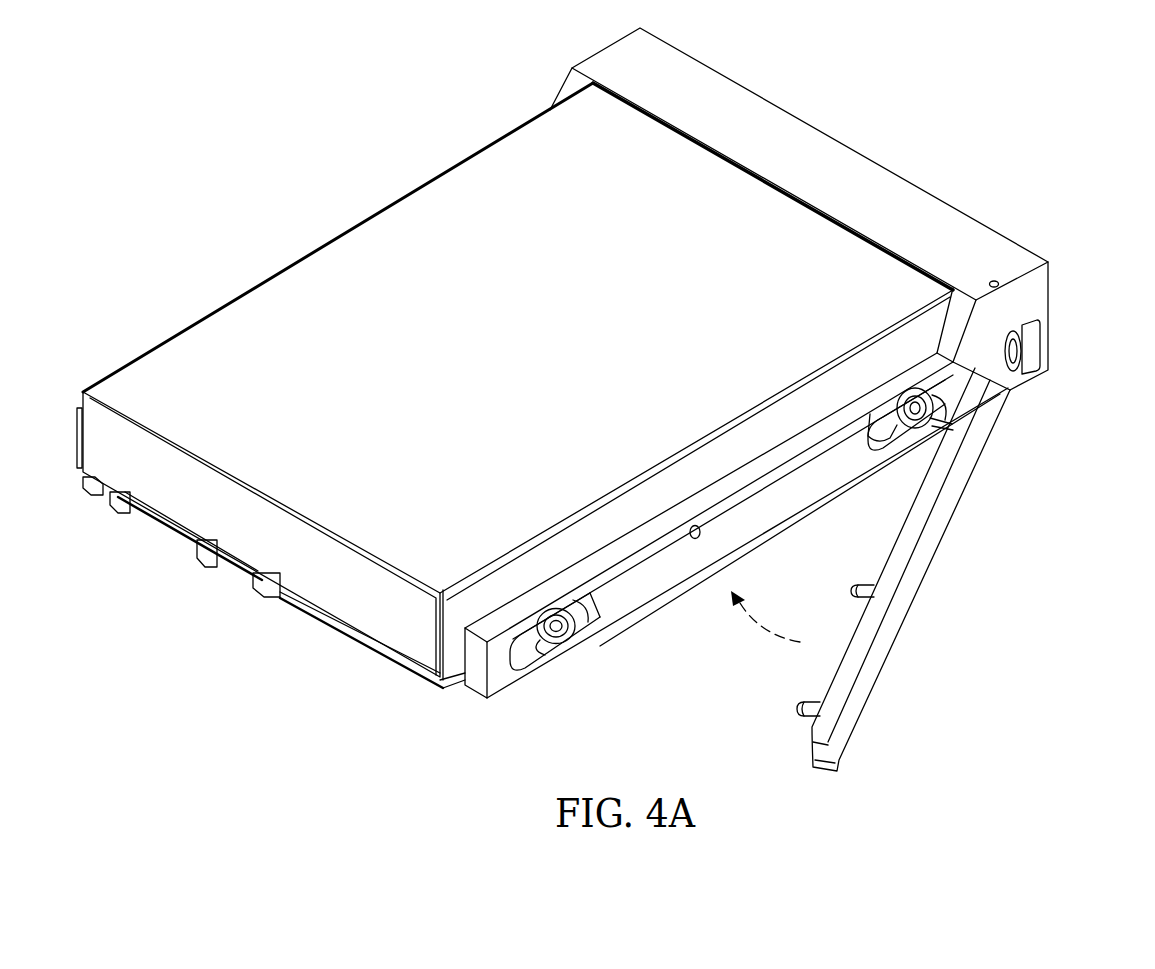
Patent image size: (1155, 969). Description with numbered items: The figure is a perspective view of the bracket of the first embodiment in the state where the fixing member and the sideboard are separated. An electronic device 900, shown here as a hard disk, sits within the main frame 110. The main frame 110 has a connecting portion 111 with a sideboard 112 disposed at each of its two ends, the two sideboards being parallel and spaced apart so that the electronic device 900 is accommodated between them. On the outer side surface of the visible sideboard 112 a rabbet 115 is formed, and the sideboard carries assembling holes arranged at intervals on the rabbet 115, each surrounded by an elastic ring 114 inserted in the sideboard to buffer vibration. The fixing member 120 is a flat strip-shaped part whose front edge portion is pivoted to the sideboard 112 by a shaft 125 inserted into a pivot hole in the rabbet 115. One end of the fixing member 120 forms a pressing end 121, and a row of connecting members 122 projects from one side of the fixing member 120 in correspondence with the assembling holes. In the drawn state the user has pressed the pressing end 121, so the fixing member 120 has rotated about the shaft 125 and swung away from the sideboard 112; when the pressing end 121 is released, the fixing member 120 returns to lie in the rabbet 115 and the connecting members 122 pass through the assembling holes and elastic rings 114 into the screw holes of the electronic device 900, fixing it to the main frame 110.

The electronic device 900 is at (290, 298).
The main frame 110 is at (610, 399).
The connecting portion 111 is at (888, 192).
The sideboard 112 is at (736, 525).
The elastic ring 114 is at (567, 640).
The rabbet 115 is at (808, 498).
The fixing member 120 is at (876, 569).
The pressing end 121 is at (1022, 368).
The connecting member 122 is at (812, 702).
The shaft 125 is at (1000, 282).